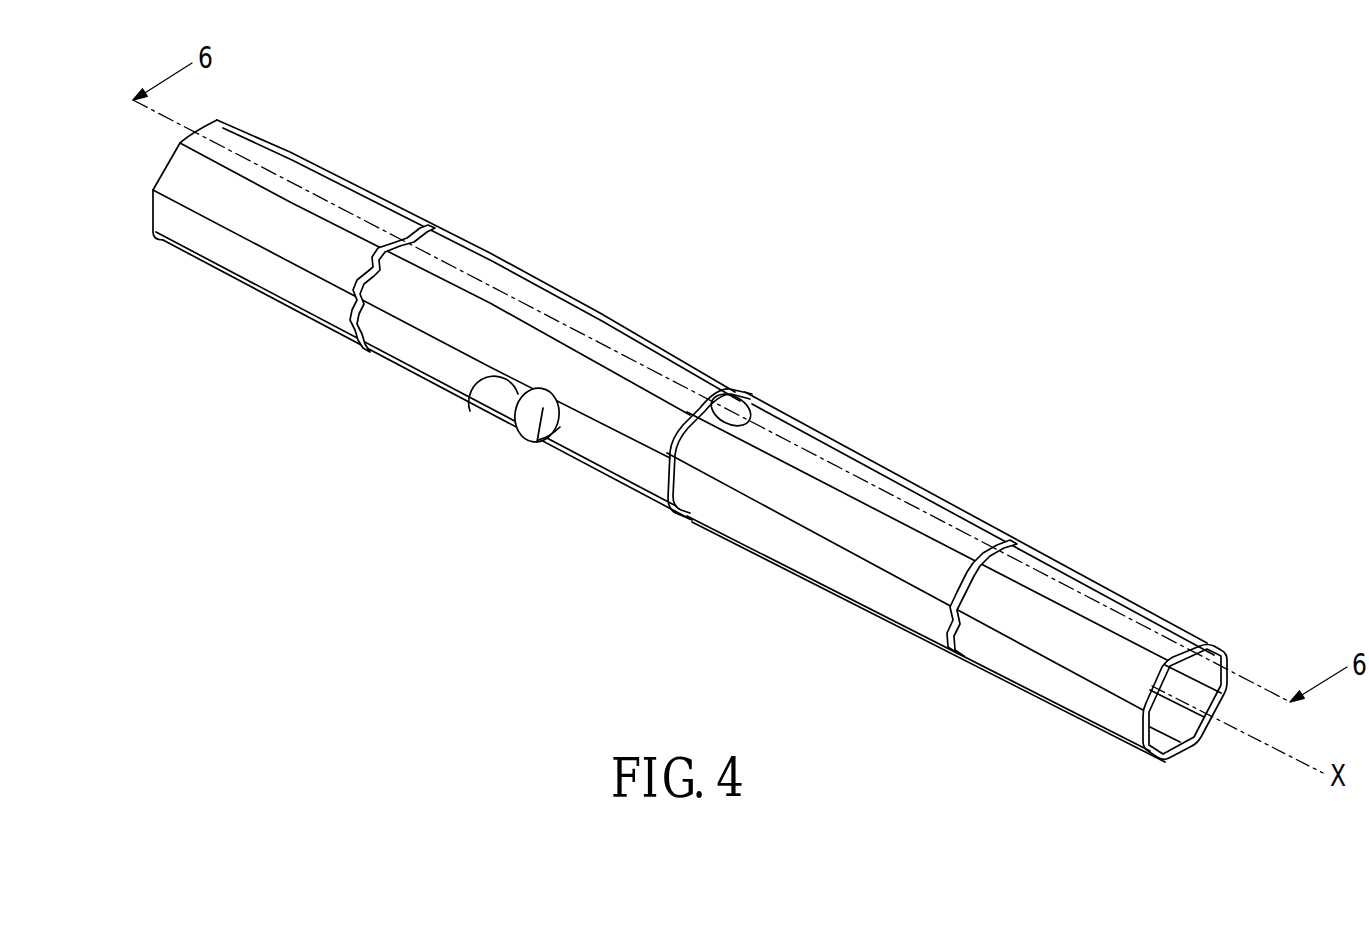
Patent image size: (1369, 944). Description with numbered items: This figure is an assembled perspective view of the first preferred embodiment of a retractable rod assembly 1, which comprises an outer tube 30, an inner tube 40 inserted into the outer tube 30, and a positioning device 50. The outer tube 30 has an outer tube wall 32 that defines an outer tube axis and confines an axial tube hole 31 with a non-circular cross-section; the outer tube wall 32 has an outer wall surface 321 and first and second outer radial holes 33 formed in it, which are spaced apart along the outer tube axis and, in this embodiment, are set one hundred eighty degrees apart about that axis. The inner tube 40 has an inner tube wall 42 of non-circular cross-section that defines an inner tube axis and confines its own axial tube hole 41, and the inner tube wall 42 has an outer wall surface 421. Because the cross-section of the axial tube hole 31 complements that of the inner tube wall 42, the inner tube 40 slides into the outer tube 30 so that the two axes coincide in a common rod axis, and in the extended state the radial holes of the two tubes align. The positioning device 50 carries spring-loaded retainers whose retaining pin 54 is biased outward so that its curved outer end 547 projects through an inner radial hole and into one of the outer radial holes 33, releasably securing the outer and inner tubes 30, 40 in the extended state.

The retractable rod assembly 1 is at (738, 469).
The outer tube 30 is at (446, 386).
The axial tube hole 31 is at (752, 402).
The outer tube wall 32 is at (668, 484).
The outer wall surface 321 is at (622, 462).
The outer radial holes 33 is at (505, 387).
The inner tube 40 is at (984, 540).
The axial tube hole 41 is at (1186, 732).
The inner tube wall 42 is at (1143, 725).
The outer wall surface 421 is at (1060, 686).
The positioning device 50 is at (475, 501).
The retaining pin 54 is at (545, 407).
The curved outer end 547 is at (517, 422).